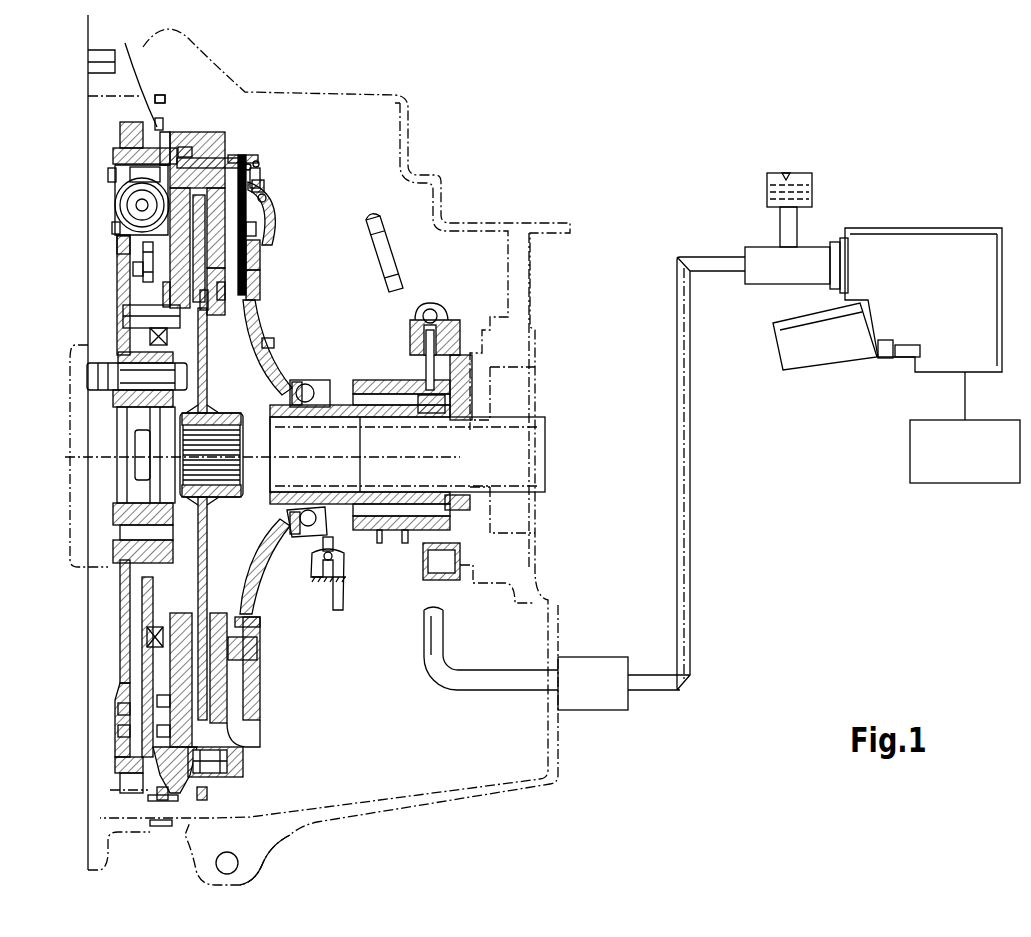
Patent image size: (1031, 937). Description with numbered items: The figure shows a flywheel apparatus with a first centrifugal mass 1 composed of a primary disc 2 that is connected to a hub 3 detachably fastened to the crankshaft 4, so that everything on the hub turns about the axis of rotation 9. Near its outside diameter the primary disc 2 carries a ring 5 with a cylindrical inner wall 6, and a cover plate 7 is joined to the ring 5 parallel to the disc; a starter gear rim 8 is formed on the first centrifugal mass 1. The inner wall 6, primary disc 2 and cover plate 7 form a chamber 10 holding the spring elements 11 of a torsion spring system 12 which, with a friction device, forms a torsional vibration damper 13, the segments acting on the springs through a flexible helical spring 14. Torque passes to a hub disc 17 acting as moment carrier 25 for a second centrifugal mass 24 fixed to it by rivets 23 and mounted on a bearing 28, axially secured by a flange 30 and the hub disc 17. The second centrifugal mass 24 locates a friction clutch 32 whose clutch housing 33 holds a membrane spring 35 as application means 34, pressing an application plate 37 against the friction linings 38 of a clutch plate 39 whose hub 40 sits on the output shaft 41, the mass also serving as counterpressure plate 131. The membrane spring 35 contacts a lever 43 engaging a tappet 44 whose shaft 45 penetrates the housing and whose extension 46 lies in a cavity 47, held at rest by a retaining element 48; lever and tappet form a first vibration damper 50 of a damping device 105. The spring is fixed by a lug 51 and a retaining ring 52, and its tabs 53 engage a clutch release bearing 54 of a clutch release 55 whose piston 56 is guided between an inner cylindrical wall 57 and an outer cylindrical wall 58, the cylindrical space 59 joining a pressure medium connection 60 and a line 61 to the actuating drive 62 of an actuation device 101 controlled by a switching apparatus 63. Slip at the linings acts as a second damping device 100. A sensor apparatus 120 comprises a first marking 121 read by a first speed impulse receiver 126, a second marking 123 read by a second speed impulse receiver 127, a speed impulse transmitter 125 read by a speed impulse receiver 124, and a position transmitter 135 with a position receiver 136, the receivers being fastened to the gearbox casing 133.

The first centrifugal mass 1 is at (116, 252).
The primary disc 2 is at (118, 160).
The hub 3 is at (118, 425).
The crankshaft 4 is at (75, 408).
The ring 5 is at (140, 165).
The inner wall 6 is at (183, 145).
The cover plate 7 is at (172, 135).
The starter gear rim 8 is at (125, 135).
The axis of rotation 9 is at (75, 472).
The chamber 10 is at (122, 240).
The spring elements 11 is at (128, 203).
The torsion spring system 12 is at (125, 207).
The torsional vibration damper 13 is at (116, 228).
The flexible helical spring 14 is at (112, 175).
The hub disc 17 is at (143, 285).
The rivets 23 is at (150, 315).
The second centrifugal mass 24 is at (172, 258).
The moment carrier 25 is at (145, 637).
The bearing 28 is at (118, 348).
The flange 30 is at (178, 340).
The friction clutch 32 is at (280, 203).
The clutch housing 33 is at (220, 290).
The application means 34 is at (298, 385).
The membrane spring 35 is at (262, 335).
The application plate 37 is at (225, 310).
The friction linings 38 is at (206, 305).
The clutch plate 39 is at (208, 562).
The hub 40 is at (225, 497).
The output shaft 41 is at (247, 480).
The lever 43 is at (260, 185).
The tappet 44 is at (240, 160).
The shaft 45 is at (248, 165).
The extension 46 is at (242, 175).
The cavity 47 is at (185, 152).
The retaining element 48 is at (255, 175).
The first vibration damper 50 is at (256, 165).
The lug 51 is at (252, 263).
The retaining ring 52 is at (252, 248).
The tabs 53 is at (270, 342).
The clutch release bearing 54 is at (305, 540).
The clutch release 55 is at (375, 550).
The piston 56 is at (412, 545).
The inner cylindrical wall 57 is at (406, 412).
The outer cylindrical wall 58 is at (432, 412).
The cylindrical space 59 is at (455, 505).
The pressure medium connection 60 is at (424, 305).
The line 61 is at (494, 682).
The actuating drive 62 is at (905, 241).
The switching apparatus 63 is at (940, 462).
The second damping device 100 is at (254, 228).
The actuation device 101 is at (853, 400).
The damping device 105 is at (262, 198).
The sensor apparatus 120 is at (128, 50).
The first marking 121 is at (160, 798).
The second marking 123 is at (213, 790).
The speed impulse receiver 124 is at (160, 95).
The speed impulse transmitter 125 is at (157, 127).
The first speed impulse receiver 126 is at (160, 822).
The second speed impulse receiver 127 is at (257, 868).
The counterpressure plate 131 is at (175, 672).
The gearbox casing 133 is at (405, 97).
The position transmitter 135 is at (320, 577).
The position receiver 136 is at (328, 578).